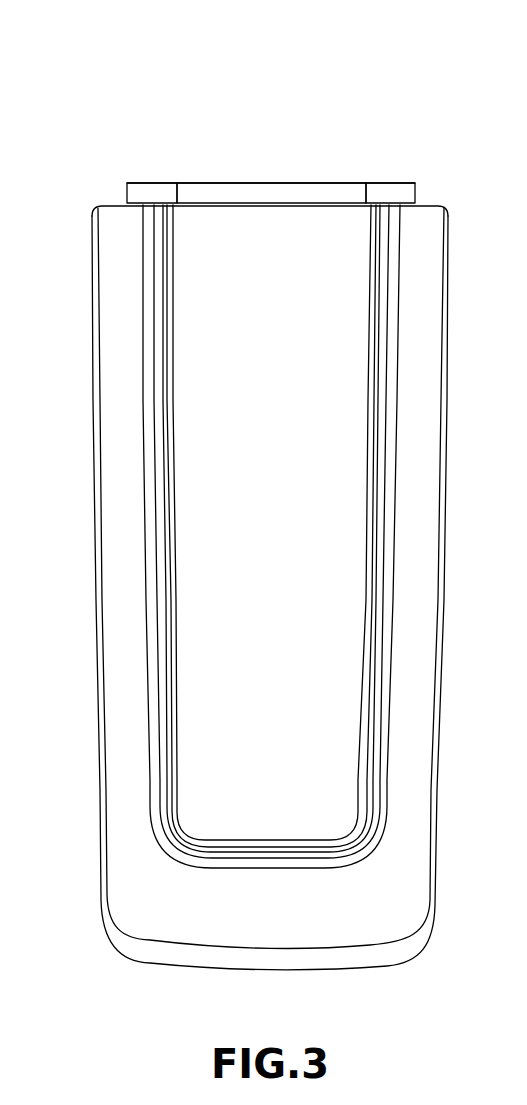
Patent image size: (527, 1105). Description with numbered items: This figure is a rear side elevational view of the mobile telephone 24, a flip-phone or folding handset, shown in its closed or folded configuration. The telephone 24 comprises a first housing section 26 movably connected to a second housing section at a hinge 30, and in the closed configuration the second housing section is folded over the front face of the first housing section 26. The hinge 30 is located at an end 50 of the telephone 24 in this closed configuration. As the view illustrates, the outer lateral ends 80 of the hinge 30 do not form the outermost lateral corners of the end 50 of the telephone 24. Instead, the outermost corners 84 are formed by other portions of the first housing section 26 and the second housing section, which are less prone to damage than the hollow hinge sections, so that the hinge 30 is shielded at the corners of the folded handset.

The mobile telephone 24 is at (423, 82).
The first housing section 26 is at (407, 652).
The hinge 30 is at (274, 182).
The end 50 is at (203, 182).
The outer lateral ends 80 is at (125, 192).
The outermost corners 84 is at (95, 200).